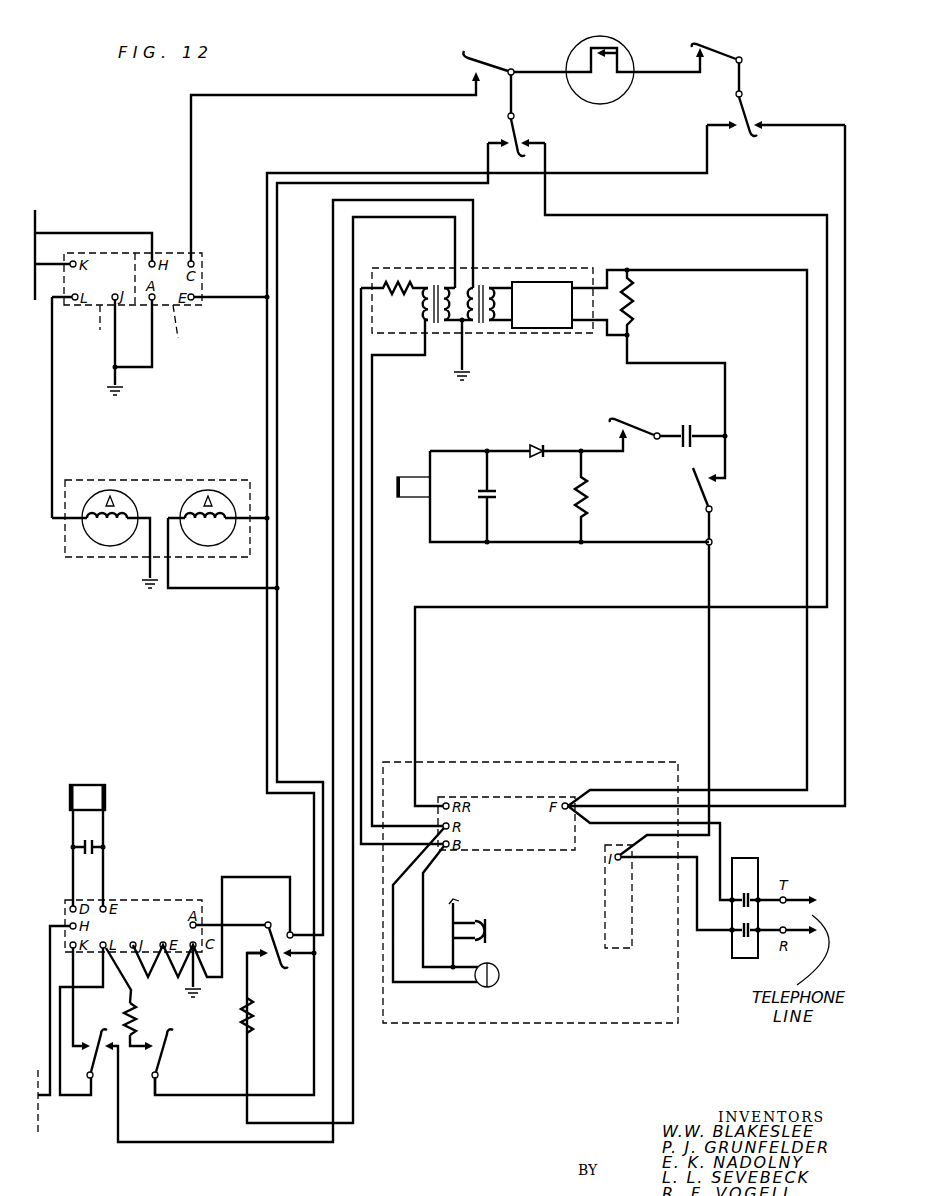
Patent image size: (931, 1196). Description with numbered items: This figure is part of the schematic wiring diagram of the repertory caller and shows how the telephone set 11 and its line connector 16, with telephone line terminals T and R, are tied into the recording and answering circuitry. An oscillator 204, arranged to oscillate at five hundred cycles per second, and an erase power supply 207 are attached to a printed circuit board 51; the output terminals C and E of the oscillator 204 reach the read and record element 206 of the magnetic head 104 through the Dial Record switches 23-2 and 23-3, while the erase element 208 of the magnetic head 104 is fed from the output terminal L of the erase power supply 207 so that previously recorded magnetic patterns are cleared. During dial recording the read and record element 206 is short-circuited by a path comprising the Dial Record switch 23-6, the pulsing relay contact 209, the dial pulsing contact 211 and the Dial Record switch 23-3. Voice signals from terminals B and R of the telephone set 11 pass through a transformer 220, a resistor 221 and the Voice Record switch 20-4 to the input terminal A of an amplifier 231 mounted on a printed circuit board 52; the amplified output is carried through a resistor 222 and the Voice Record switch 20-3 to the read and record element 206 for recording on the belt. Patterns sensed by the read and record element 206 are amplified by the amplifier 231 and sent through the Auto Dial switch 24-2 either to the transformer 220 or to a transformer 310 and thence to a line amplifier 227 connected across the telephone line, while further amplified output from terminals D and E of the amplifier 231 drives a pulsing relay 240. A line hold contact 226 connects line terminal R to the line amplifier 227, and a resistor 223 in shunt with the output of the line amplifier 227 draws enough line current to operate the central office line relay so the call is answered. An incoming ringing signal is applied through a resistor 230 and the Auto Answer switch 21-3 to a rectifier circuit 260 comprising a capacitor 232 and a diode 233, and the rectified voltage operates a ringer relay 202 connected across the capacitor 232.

The Dial Record switch 23-2 is at (504, 32).
The dial pulsing contact 211 is at (615, 43).
The pulsing relay contact 209 is at (727, 53).
The Dial Record switch 23-6 is at (745, 113).
The Dial Record switch 23-3 is at (520, 137).
The oscillator 204 is at (165, 252).
The erase power supply 207 is at (100, 332).
The printed circuit board 51 is at (187, 329).
The printed circuit board 52 is at (527, 268).
The transformer 220 is at (440, 328).
The transformer 310 is at (488, 326).
The line amplifier 227 is at (542, 328).
The resistor 223 is at (636, 300).
The erase element 208 is at (130, 492).
The read and record element 206 is at (218, 492).
The magnetic head 104 is at (125, 557).
The rectifier circuit 260 is at (498, 443).
The diode 233 is at (540, 444).
The Auto Answer switch 21-3 is at (635, 425).
The ringer relay 202 is at (408, 497).
The capacitor 232 is at (495, 497).
The resistor 230 is at (587, 493).
The line hold contact 226 is at (710, 493).
The pulsing relay 240 is at (97, 792).
The amplifier 231 is at (138, 900).
The Voice Record switch 20-4 is at (284, 923).
The line connector 16 is at (757, 868).
The resistor 222 is at (135, 1018).
The Voice Record switch 20-3 is at (162, 1042).
The resistor 221 is at (250, 1030).
The Auto Dial switch 24-2 is at (100, 1043).
The telephone set 11 is at (563, 1024).